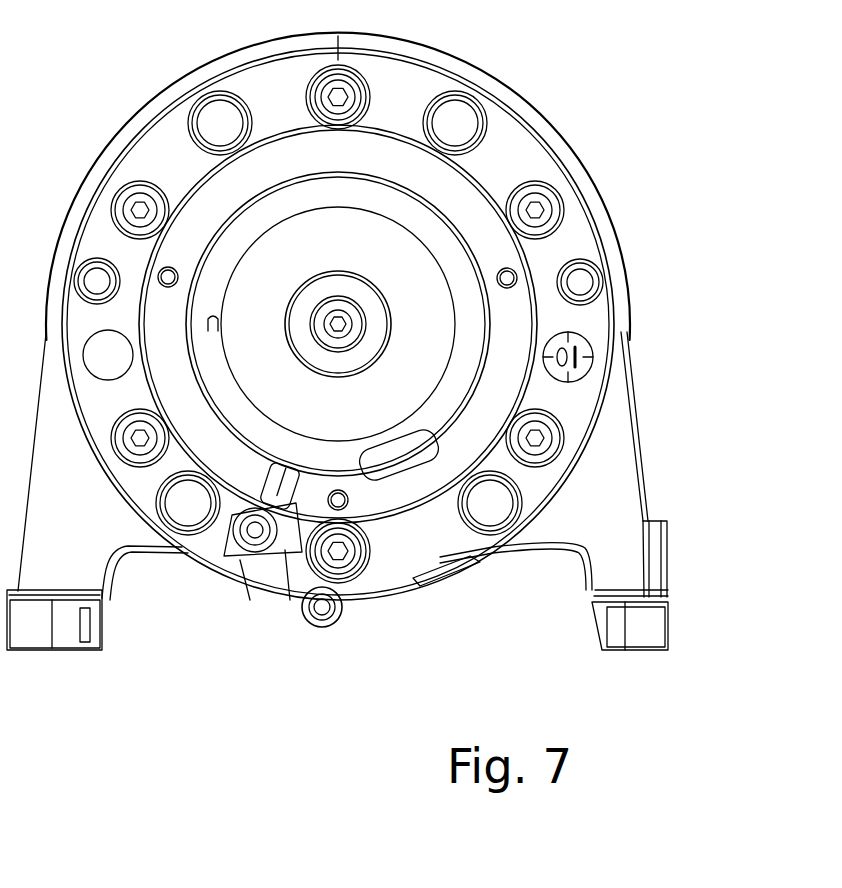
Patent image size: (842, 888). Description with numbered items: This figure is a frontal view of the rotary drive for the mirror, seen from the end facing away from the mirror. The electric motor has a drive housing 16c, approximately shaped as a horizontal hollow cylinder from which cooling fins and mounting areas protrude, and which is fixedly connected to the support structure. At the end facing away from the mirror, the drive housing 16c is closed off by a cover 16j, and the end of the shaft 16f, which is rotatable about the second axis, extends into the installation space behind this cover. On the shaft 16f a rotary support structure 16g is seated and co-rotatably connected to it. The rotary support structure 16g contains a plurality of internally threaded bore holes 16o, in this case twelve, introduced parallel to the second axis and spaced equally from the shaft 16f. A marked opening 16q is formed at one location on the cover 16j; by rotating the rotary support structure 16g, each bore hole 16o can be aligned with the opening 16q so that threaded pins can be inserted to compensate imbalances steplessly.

The cover 16j is at (505, 150).
The shaft 16f is at (350, 326).
The drive housing 16c is at (603, 453).
The bore holes 16o is at (245, 536).
The marked opening 16q is at (222, 567).
The rotary support structure 16g is at (290, 585).